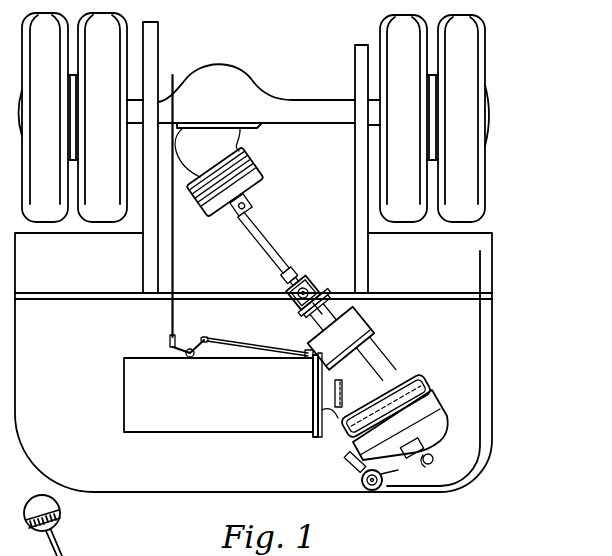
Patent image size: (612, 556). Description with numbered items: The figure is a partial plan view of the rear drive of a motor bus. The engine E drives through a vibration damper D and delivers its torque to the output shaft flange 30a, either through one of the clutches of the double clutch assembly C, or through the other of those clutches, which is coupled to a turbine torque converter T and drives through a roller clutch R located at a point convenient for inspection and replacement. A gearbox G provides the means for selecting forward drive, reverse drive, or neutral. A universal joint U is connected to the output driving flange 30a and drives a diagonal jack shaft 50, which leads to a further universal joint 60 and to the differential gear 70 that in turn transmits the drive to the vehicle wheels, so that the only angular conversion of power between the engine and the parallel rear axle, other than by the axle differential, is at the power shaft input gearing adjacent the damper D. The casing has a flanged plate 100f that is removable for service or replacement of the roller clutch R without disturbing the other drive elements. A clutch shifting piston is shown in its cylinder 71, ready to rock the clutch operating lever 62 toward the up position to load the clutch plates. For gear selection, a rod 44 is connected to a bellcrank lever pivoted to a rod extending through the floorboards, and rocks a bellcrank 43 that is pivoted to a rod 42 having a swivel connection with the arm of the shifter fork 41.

The differential gear 70 is at (243, 82).
The universal joint 60 is at (249, 203).
The diagonal jack shaft 50 is at (268, 229).
The universal joint U is at (320, 285).
The output shaft flange 30a is at (315, 303).
The gearbox G is at (374, 316).
The double clutch assembly C is at (378, 392).
The turbine torque converter T is at (427, 402).
The roller clutch R is at (410, 441).
The flanged plate 100f is at (430, 463).
The clutch operating lever 62 is at (350, 462).
The cylinder 71 is at (361, 481).
The vibration damper D is at (333, 393).
The engine E is at (184, 428).
The rod 44 is at (176, 258).
The bellcrank 43 is at (199, 337).
The rod 42 is at (246, 342).
The shifter fork 41 is at (306, 351).